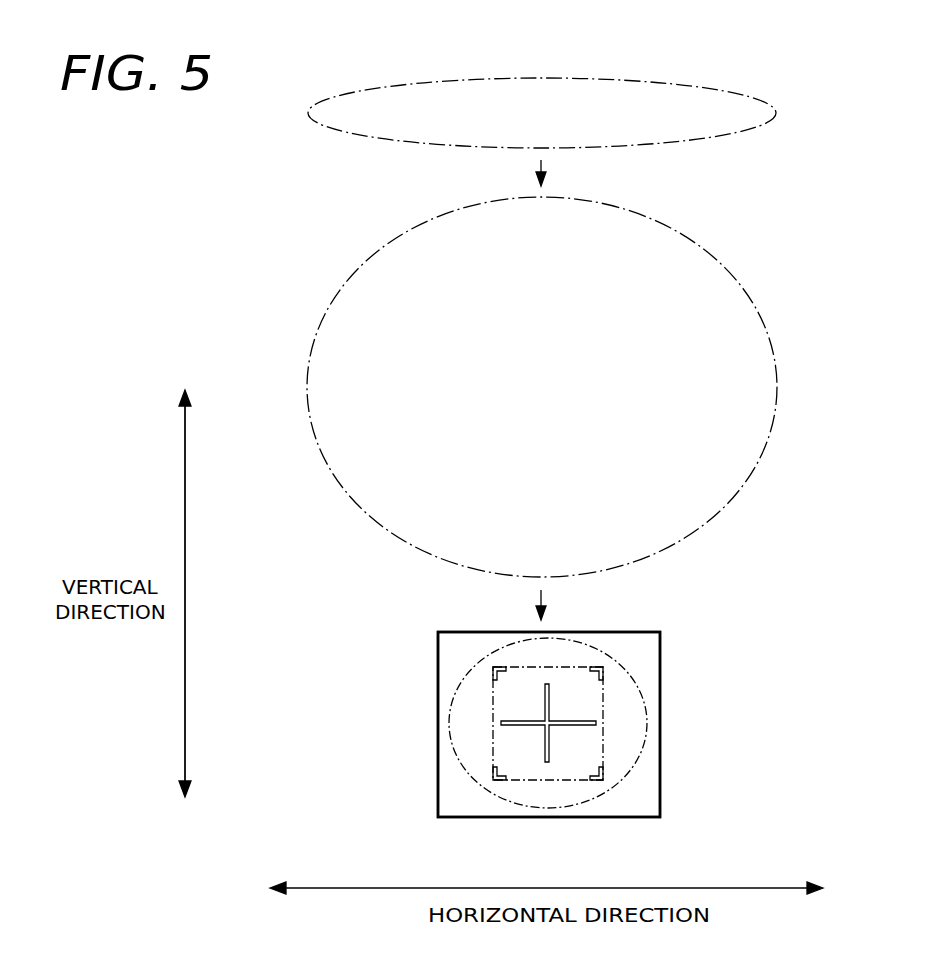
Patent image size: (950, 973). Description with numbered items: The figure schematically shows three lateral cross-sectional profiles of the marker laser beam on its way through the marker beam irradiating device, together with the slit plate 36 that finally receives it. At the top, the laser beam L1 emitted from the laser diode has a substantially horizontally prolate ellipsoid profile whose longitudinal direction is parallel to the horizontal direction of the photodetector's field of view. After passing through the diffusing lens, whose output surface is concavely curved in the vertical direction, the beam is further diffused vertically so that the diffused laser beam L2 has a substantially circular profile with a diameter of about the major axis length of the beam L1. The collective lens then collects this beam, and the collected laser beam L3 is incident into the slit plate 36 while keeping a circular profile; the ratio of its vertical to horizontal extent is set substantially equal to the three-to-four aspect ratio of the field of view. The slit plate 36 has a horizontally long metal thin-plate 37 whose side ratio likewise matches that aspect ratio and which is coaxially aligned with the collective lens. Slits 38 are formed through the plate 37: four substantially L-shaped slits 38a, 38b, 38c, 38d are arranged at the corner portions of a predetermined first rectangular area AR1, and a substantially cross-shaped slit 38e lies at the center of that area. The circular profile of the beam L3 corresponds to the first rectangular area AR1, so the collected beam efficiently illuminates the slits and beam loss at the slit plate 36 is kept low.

The laser beam L1 is at (776, 118).
The diffused laser beam L2 is at (709, 519).
The collected laser beam L3 is at (648, 723).
The slit plate 36 is at (662, 650).
The metal thin-plate 37 is at (650, 793).
The slits 38 is at (529, 728).
The slit 38a is at (492, 676).
The slit 38b is at (598, 668).
The slit 38c is at (603, 782).
The slit 38d is at (497, 782).
The slit 38e is at (547, 703).
The first rectangular area AR1 is at (594, 696).